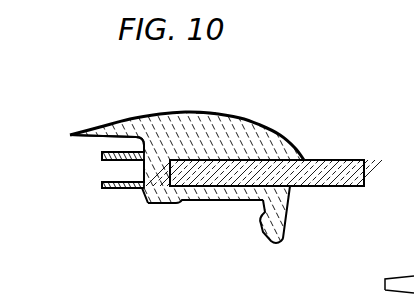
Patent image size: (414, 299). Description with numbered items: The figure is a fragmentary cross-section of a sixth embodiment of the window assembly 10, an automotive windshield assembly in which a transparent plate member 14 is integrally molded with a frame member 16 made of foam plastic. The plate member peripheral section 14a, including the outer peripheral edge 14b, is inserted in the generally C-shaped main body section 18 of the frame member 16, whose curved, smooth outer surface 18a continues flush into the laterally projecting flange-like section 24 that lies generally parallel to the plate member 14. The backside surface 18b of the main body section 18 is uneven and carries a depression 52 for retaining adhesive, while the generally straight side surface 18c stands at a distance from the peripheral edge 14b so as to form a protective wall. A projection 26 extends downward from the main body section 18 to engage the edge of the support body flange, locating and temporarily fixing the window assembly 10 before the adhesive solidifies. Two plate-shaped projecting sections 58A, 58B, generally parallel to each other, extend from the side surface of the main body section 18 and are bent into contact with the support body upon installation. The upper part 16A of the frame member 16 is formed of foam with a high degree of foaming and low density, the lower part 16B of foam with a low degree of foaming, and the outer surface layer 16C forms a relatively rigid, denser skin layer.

The window assembly 10 is at (340, 97).
The transparent plate member 14 is at (235, 209).
The peripheral section of plate member 14a is at (303, 159).
The outer peripheral edge of plate member 14b is at (157, 188).
The frame member 16 is at (191, 177).
The upper part of frame member 16A is at (173, 133).
The lower part of frame member 16B is at (197, 201).
The outer surface layer of frame member 16C is at (267, 130).
The main body section 18 is at (172, 177).
The outer surface of main body section 18a is at (207, 112).
The backside surface of main body section 18b is at (160, 204).
The side surface of main body section 18c is at (143, 202).
The flange-like section 24 is at (103, 127).
The projection 26 is at (283, 229).
The depression 52 is at (219, 201).
The first projecting section 58A is at (103, 156).
The second projecting section 58B is at (103, 187).